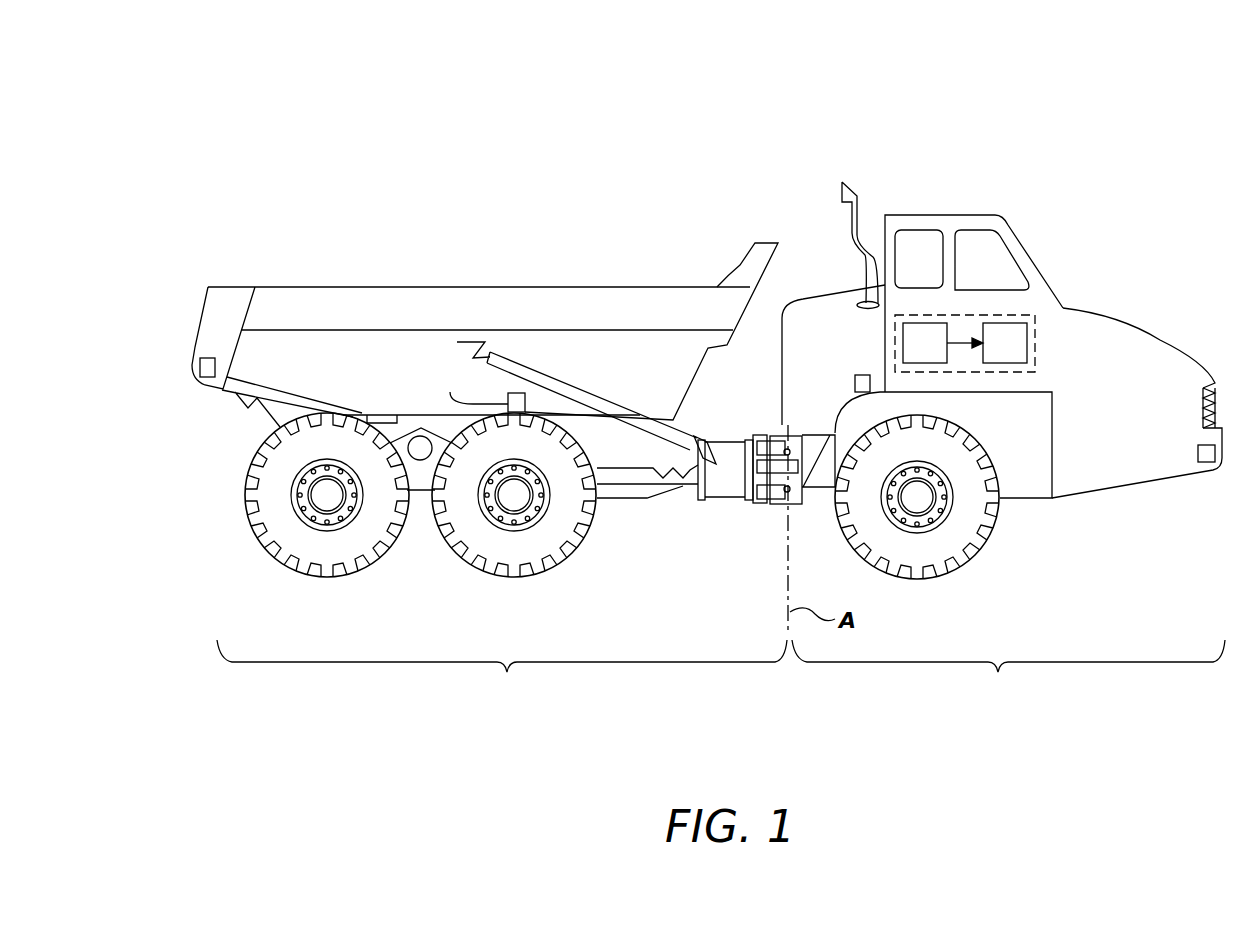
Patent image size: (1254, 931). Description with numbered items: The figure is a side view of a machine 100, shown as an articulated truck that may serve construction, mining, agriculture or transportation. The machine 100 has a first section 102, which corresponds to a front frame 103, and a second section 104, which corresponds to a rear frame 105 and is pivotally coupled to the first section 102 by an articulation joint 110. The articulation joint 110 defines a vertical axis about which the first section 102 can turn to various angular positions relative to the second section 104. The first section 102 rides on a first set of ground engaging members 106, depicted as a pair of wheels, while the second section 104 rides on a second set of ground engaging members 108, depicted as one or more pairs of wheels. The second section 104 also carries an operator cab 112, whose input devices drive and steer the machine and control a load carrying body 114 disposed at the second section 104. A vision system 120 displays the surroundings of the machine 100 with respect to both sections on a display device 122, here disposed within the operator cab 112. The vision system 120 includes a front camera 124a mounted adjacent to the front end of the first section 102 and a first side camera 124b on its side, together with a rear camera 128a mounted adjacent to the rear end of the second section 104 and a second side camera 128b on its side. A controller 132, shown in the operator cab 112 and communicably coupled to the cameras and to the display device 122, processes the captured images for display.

The machine 100 is at (1123, 138).
The first section 102 is at (1003, 494).
The front frame 103 is at (1165, 326).
The second section 104 is at (502, 540).
The rear frame 105 is at (203, 410).
The first set of ground engaging members 106 is at (915, 585).
The second set of ground engaging members 108 is at (524, 615).
The articulation joint 110 is at (748, 515).
The operator cab 112 is at (1000, 213).
The load carrying body 114 is at (527, 287).
The vision system 120 is at (987, 313).
The display device 122 is at (1005, 343).
The front camera 124a is at (1197, 453).
The first side camera 124b is at (861, 375).
The rear camera 128a is at (200, 358).
The second side camera 128b is at (508, 404).
The controller 132 is at (925, 343).